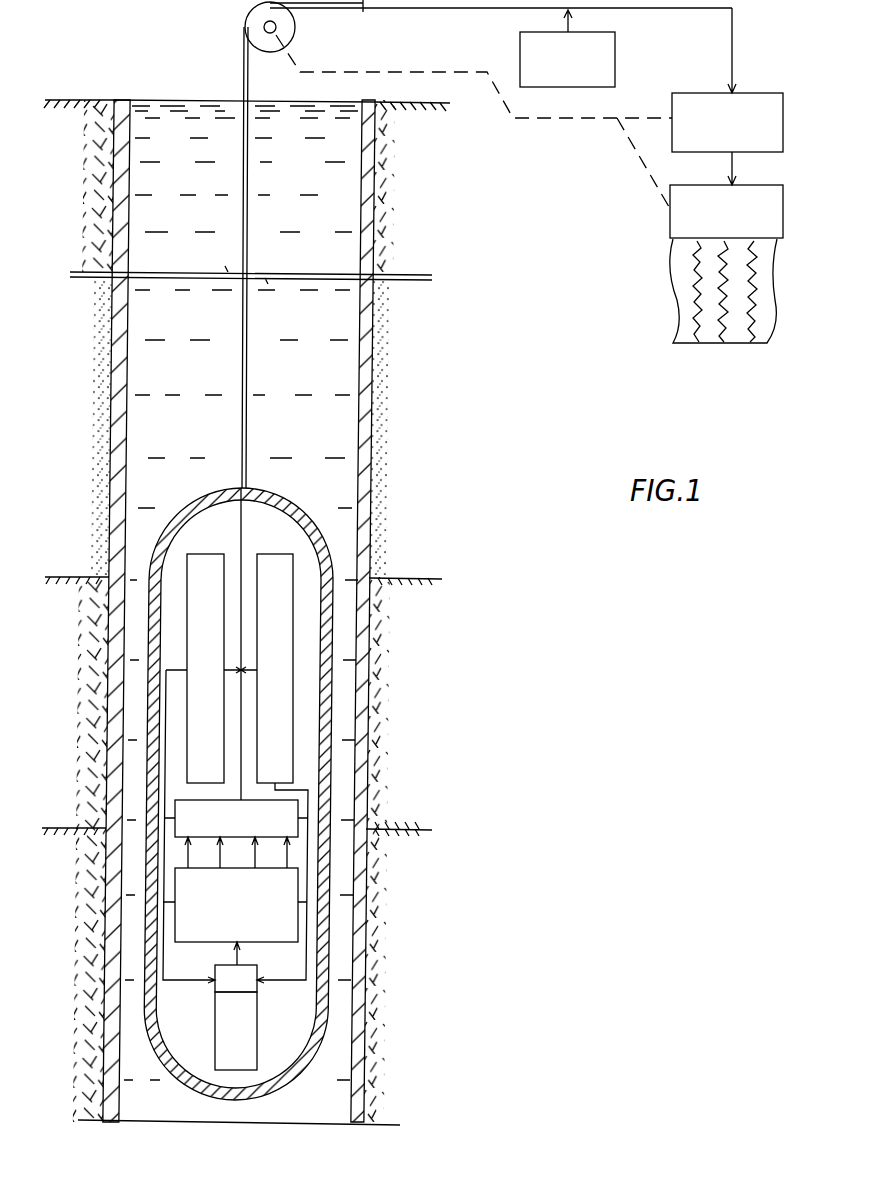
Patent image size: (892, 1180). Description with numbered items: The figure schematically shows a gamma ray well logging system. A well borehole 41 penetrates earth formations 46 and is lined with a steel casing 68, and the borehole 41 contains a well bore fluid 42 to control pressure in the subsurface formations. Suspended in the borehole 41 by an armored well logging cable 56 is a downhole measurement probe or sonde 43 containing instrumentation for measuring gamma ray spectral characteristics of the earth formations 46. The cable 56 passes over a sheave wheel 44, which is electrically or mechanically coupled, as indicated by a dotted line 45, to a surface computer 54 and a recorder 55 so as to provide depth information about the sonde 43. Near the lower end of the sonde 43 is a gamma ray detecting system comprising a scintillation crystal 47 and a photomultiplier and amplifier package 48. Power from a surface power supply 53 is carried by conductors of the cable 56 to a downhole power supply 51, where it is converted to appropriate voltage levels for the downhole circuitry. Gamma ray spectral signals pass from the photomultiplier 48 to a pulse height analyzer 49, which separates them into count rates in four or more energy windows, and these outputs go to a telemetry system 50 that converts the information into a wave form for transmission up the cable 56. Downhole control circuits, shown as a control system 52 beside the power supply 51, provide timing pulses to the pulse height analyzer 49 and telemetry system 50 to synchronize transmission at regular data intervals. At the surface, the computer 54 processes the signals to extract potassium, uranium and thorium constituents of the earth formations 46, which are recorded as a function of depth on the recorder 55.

The well borehole 41 is at (160, 97).
The well bore fluid 42 is at (317, 194).
The downhole measurement probe or sonde 43 is at (313, 520).
The sheave wheel 44 is at (248, 22).
The dotted line 45 is at (396, 72).
The earth formations 46 is at (92, 403).
The scintillation crystal 47 is at (257, 1047).
The photomultiplier and amplifier package 48 is at (257, 987).
The pulse height analyzer 49 is at (298, 889).
The telemetry system 50 is at (298, 808).
The downhole power supply 51 is at (188, 572).
The control system 52 is at (293, 578).
The surface power supply 53 is at (615, 52).
The surface computer 54 is at (757, 93).
The recorder 55 is at (670, 226).
The armored well logging cable 56 is at (243, 66).
The steel casing 68 is at (358, 697).